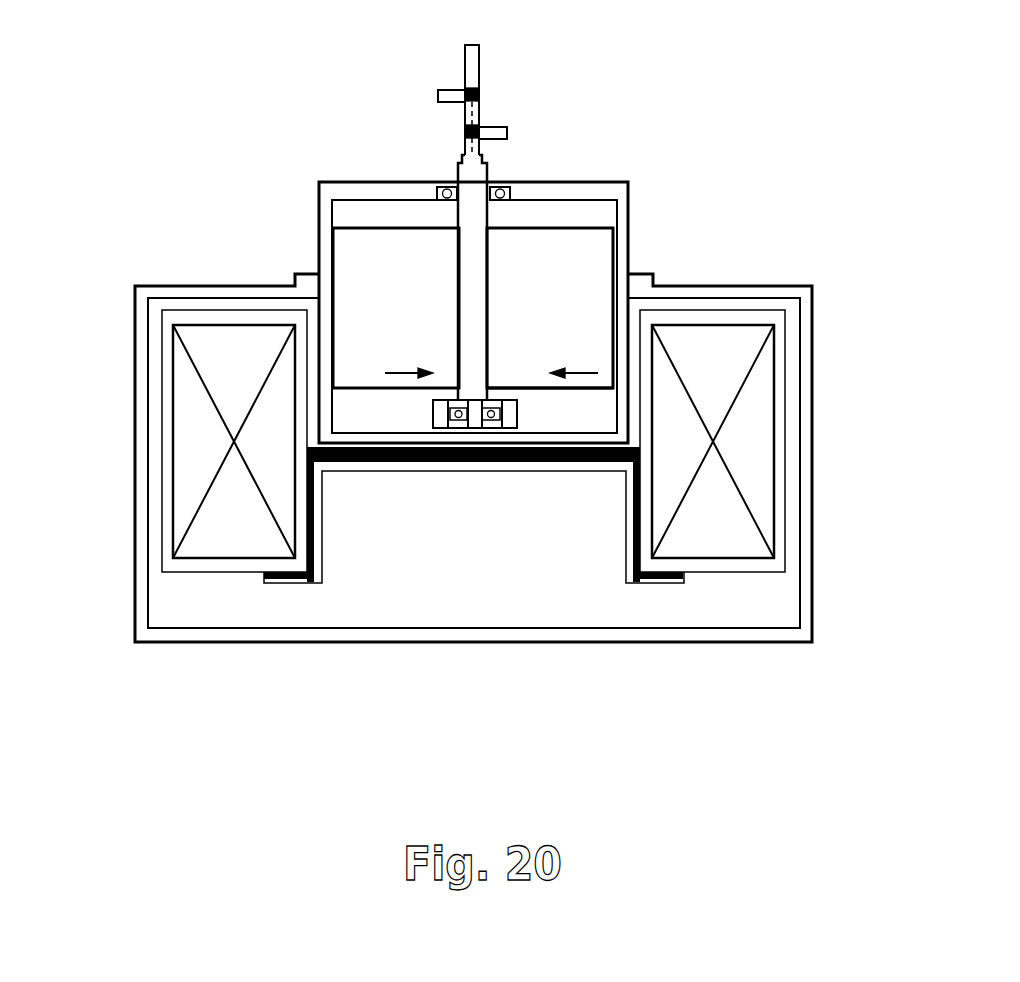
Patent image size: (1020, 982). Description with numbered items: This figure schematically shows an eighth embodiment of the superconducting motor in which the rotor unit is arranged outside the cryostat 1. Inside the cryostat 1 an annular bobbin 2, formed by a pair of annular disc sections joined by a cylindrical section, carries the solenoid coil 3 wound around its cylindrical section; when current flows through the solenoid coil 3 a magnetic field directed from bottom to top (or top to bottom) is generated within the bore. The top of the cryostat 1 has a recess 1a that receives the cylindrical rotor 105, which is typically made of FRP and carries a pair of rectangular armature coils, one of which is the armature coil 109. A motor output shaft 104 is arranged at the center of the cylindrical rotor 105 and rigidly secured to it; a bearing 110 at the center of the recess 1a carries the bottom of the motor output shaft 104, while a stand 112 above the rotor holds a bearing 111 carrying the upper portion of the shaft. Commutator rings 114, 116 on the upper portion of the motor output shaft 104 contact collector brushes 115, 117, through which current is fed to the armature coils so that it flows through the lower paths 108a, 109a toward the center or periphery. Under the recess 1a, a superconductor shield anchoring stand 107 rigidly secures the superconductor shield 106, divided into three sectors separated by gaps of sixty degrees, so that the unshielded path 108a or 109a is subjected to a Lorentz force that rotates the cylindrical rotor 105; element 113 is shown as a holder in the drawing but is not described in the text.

The cryostat 1 is at (192, 613).
The recess 1a is at (594, 428).
The annular bobbin 2 is at (170, 570).
The solenoid coil 3 is at (183, 458).
The motor output shaft 104 is at (519, 218).
The cylindrical rotor 105 is at (559, 286).
The superconductor shield 106 is at (352, 463).
The superconductor shield anchoring stand 107 is at (302, 580).
The path of armature coil 108a is at (382, 230).
The armature coil 109 is at (542, 230).
The path of armature coil 109a is at (527, 388).
The bearing 110 is at (453, 420).
The bearing 111 is at (437, 184).
The stand 112 is at (327, 185).
The bearing holder 113 is at (508, 420).
The commutator ring 114 is at (478, 126).
The collector brush 115 is at (510, 126).
The commutator ring 116 is at (437, 93).
The collector brush 117 is at (465, 90).